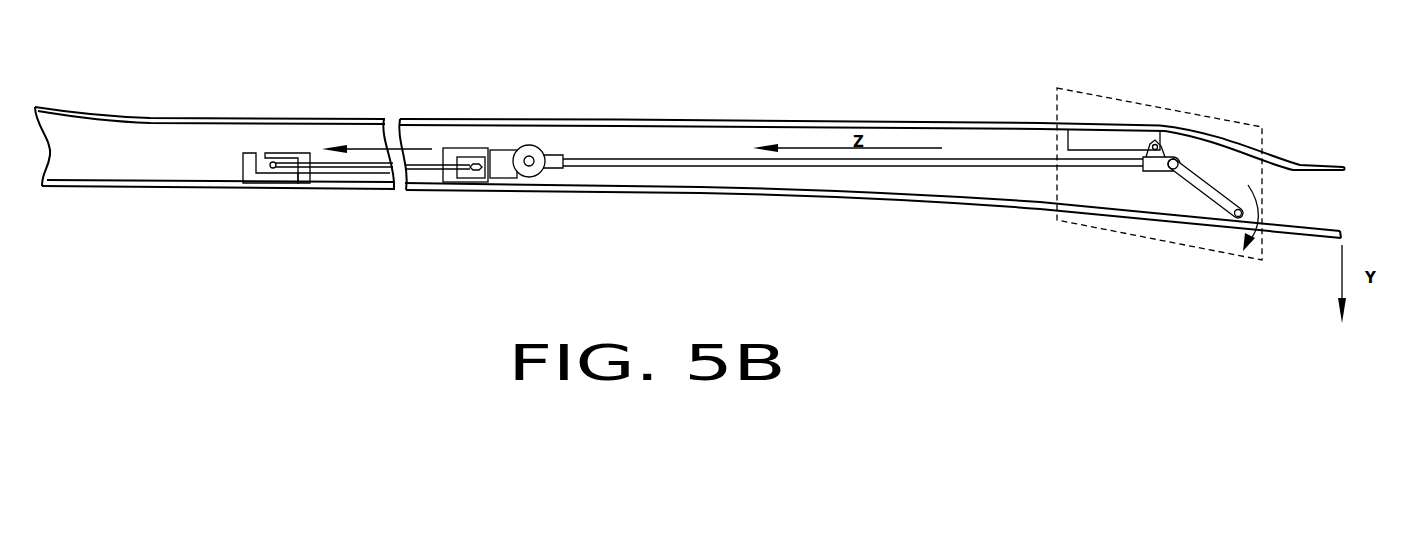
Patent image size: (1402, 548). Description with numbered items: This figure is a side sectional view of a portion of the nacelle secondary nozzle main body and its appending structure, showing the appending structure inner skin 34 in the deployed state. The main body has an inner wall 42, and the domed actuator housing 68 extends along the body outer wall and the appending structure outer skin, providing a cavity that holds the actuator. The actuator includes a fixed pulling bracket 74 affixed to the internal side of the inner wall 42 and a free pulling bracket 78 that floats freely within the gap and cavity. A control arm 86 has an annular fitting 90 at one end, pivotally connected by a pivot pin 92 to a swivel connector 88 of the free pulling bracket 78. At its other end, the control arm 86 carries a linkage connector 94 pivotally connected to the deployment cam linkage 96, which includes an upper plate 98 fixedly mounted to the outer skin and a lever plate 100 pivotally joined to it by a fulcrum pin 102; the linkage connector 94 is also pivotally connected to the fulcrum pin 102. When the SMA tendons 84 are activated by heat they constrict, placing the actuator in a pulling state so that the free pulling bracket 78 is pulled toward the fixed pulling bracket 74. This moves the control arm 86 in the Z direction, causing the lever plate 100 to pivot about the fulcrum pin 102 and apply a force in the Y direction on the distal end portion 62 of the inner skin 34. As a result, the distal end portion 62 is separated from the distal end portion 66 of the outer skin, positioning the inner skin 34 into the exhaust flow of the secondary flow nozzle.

The appending structure inner skin 34 is at (932, 197).
The inner wall 42 is at (167, 187).
The distal end portion 62 is at (1327, 239).
The distal end portion 66 is at (1318, 163).
The domed actuator housing 68 is at (172, 118).
The fixed pulling bracket 74 is at (296, 168).
The free pulling bracket 78 is at (453, 182).
The SMA tendons 84 is at (367, 174).
The control arm 86 is at (697, 163).
The swivel connector 88 is at (503, 165).
The annular fitting 90 is at (553, 150).
The pivot pin 92 is at (532, 146).
The linkage connector 94 is at (1150, 171).
The deployment cam linkage 96 is at (1088, 93).
The upper plate 98 is at (1127, 140).
The lever plate 100 is at (1210, 193).
The fulcrum pin 102 is at (1171, 169).